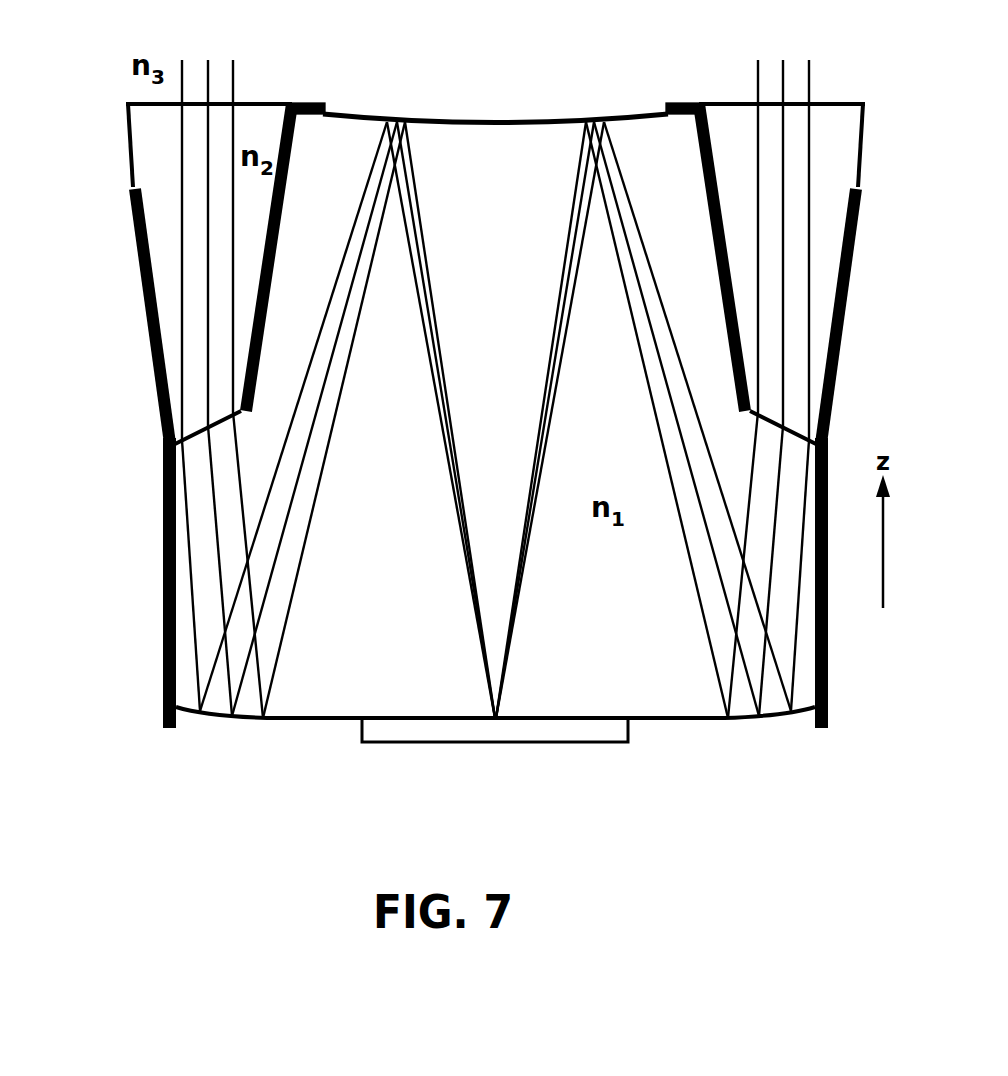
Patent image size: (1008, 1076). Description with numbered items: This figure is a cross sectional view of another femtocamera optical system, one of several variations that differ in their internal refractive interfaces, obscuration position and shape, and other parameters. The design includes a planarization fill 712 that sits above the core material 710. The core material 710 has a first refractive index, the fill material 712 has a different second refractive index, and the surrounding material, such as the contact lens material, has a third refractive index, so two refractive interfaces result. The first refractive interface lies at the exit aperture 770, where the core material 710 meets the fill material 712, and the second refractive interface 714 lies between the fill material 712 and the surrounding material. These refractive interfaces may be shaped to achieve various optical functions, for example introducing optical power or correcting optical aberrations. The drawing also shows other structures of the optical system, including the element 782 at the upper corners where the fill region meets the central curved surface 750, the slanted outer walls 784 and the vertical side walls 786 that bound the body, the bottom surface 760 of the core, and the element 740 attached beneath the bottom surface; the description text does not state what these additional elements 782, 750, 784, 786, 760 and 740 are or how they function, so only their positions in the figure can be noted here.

The core material 710 is at (628, 649).
The second refractive interface 714 is at (262, 102).
The spacer block 782 is at (304, 101).
The curved secondary reflector 750 is at (623, 117).
The planarization fill 712 is at (181, 146).
The slanted side wall 784 is at (139, 262).
The exit aperture 770 is at (207, 424).
The vertical side wall 786 is at (165, 666).
The bottom primary reflector 760 is at (743, 722).
The photovoltaic cell 740 is at (377, 745).